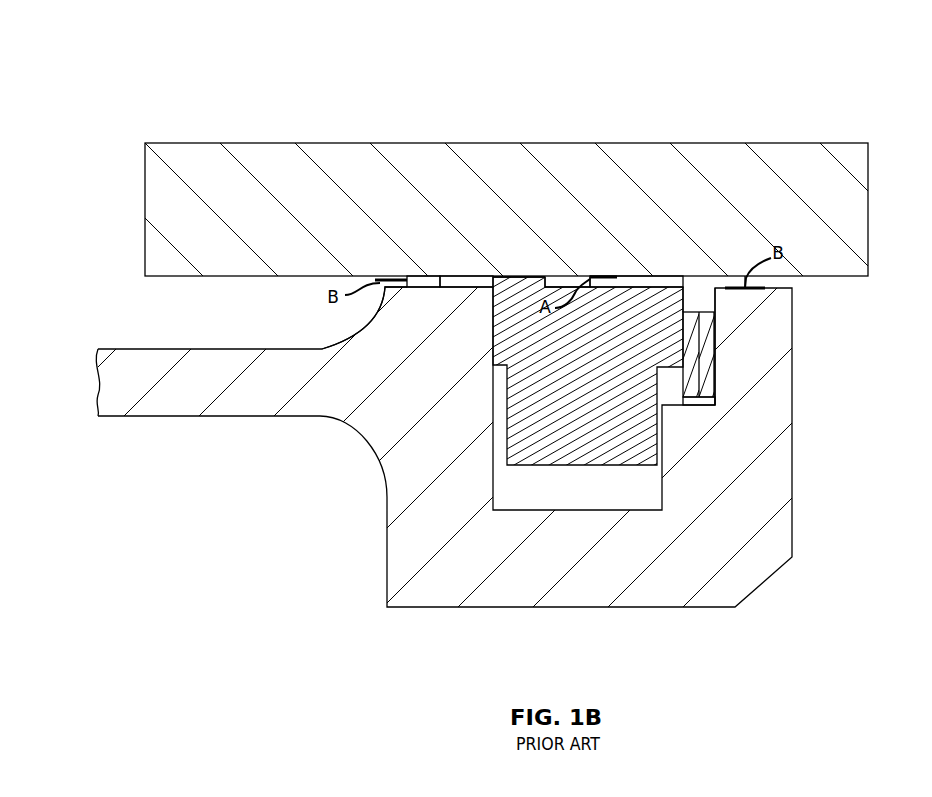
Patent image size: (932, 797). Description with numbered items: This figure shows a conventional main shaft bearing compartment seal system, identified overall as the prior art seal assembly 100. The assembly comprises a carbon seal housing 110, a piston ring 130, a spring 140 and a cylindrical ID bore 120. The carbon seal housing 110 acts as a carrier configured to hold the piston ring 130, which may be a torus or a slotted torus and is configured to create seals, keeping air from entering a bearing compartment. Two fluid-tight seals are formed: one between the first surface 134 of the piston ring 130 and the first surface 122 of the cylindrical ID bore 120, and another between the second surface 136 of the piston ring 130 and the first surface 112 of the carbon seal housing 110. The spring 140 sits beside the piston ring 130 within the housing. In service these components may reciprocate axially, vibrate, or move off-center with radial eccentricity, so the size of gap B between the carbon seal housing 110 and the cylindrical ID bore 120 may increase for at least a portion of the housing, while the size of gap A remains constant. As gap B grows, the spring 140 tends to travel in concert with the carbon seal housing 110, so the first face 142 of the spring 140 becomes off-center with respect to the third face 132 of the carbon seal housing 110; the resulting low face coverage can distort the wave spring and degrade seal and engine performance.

The prior art sealing assembly 100 is at (884, 88).
The carbon seal housing 110 is at (563, 590).
The first surface of the carbon seal housing 112 is at (492, 298).
The cylindrical ID bore 120 is at (803, 154).
The first surface of the cylindrical ID bore 122 is at (538, 276).
The piston ring 130 is at (638, 452).
The third face of the carbon seal housing 132 is at (685, 300).
The first surface of the piston ring 134 is at (520, 276).
The second surface of the piston ring 136 is at (483, 276).
The spring 140 is at (700, 346).
The first face of the spring 142 is at (686, 372).